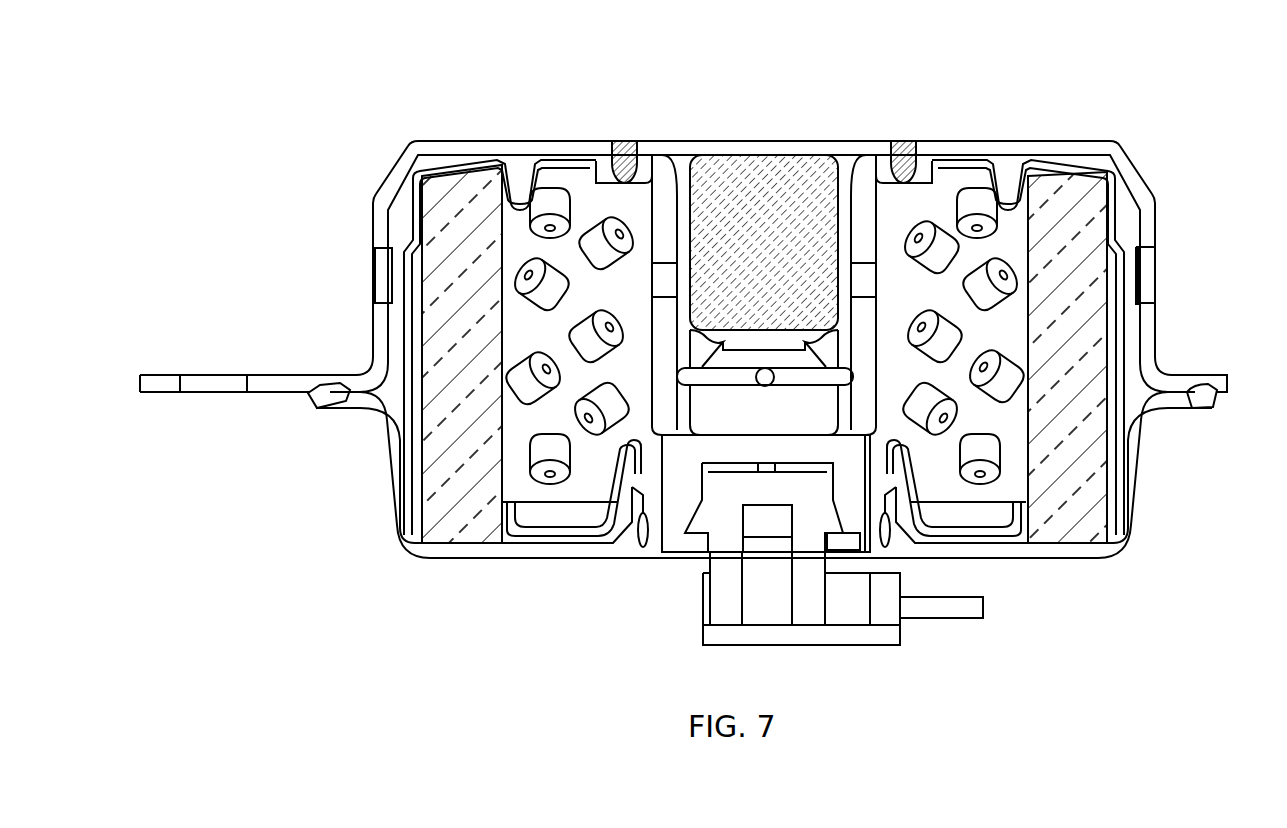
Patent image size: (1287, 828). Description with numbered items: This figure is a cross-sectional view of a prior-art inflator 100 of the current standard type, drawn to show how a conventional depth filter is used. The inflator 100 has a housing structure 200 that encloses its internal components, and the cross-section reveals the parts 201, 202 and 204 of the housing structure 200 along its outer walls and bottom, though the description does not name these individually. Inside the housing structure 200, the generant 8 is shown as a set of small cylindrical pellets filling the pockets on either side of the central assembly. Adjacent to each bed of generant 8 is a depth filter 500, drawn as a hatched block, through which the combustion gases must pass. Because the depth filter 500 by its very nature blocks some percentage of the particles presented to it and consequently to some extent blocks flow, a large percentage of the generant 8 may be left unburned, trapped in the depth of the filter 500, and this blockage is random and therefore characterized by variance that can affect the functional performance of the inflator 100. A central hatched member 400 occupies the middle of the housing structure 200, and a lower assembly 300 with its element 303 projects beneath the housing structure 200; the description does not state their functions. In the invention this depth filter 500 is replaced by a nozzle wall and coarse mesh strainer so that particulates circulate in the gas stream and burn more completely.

The inflator 100 is at (856, 70).
The housing structure 200 is at (1165, 144).
The housing side wall tab 201 is at (383, 277).
The housing top wall 202 is at (388, 173).
The bottom cover 204 is at (383, 457).
The generant 8 is at (552, 188).
The filler block 400 is at (737, 175).
The depth filter 500 is at (1085, 197).
The connector assembly 300 is at (809, 659).
The connector pin 303 is at (737, 598).